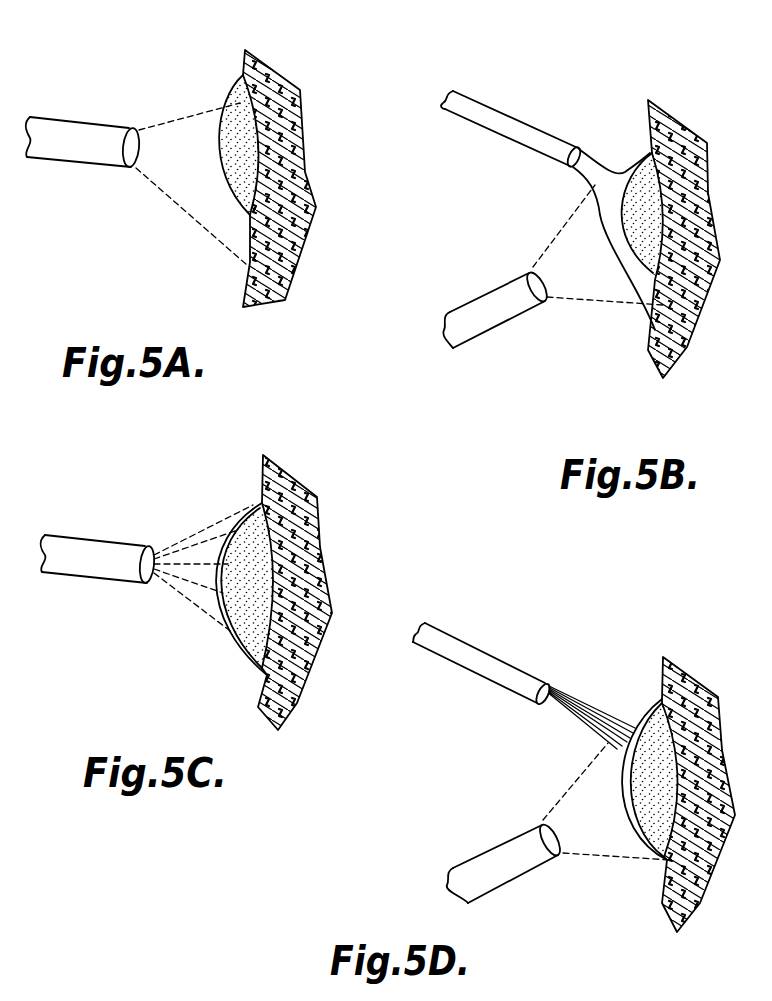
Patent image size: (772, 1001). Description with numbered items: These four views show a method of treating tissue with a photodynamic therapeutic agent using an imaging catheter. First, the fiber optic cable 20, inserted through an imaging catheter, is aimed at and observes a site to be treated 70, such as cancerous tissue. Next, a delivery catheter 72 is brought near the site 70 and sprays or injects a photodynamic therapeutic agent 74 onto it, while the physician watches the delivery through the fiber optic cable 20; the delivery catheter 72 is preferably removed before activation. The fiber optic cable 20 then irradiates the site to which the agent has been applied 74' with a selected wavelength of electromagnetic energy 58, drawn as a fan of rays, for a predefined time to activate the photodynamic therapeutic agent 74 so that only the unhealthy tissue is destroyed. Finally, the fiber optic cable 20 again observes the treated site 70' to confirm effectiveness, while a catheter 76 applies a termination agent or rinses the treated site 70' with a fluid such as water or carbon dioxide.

In FIG. 5A, the fiber optic cable 20 is at (83, 123).
In FIG. 5B, the fiber optic cable 20 is at (480, 292).
In FIG. 5C, the fiber optic cable 20 is at (100, 538).
In FIG. 5D, the fiber optic cable 20 is at (500, 847).
In FIG. 5A, the site to be treated 70 is at (213, 133).
In FIG. 5B, the site to be treated 70 is at (609, 261).
In FIG. 5B, the delivery catheter 72 is at (517, 117).
In FIG. 5B, the photodynamic therapeutic agent 74 is at (614, 193).
In FIG. 5C, the photodynamic therapeutic agent 74 is at (241, 547).
In FIG. 5C, the electromagnetic energy 58 is at (202, 530).
In FIG. 5C, the site to which the therapeutic agent has been applied 74' is at (201, 603).
In FIG. 5D, the catheter 76 is at (483, 651).
In FIG. 5D, the treated site 70' is at (630, 821).